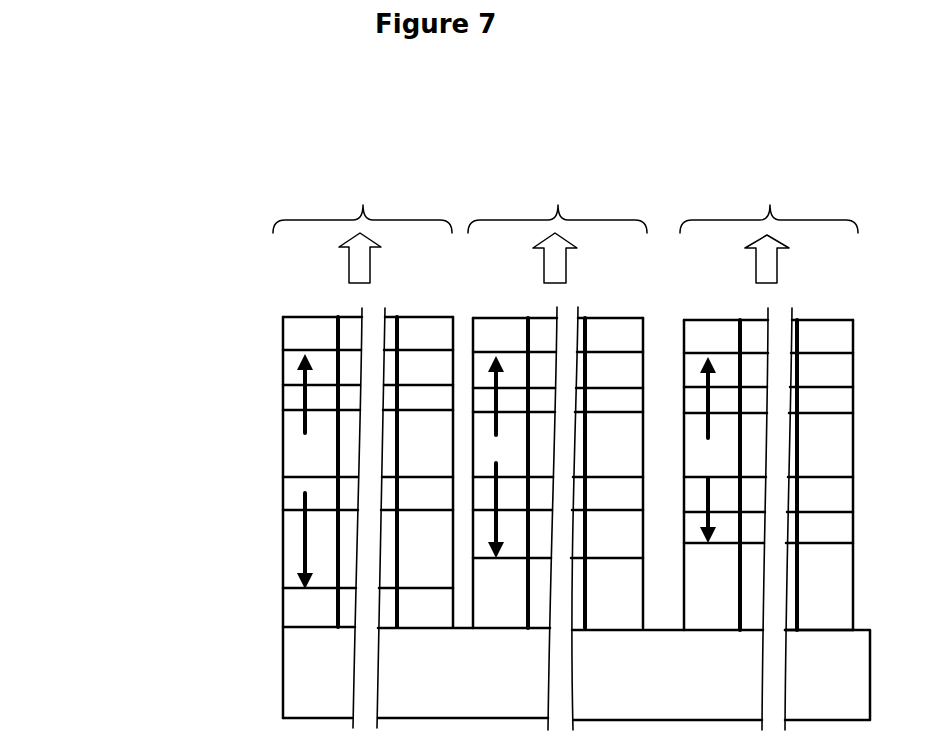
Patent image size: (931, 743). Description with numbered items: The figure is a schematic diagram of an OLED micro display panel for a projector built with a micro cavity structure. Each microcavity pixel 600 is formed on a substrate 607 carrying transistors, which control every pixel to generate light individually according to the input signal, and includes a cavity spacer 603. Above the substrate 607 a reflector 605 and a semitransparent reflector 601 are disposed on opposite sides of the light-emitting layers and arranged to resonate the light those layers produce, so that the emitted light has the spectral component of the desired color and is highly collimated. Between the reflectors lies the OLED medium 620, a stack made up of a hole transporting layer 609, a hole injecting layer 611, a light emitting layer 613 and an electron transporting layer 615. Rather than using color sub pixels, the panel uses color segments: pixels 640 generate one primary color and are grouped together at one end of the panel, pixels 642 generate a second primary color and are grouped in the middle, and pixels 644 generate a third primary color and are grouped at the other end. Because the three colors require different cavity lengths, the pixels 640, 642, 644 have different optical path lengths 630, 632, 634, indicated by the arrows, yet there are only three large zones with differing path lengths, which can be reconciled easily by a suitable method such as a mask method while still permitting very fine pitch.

The microcavity pixel 600 is at (100, 293).
The semitransparent reflector 601 is at (298, 335).
The cavity spacer 603 is at (292, 534).
The reflector 605 is at (290, 606).
The substrate 607 is at (292, 648).
The hole transporting layer 609 is at (292, 497).
The hole injecting layer 611 is at (292, 441).
The light emitting layer 613 is at (290, 398).
The electron transporting layer 615 is at (290, 362).
The OLED medium 620 is at (163, 348).
The optical path length 630 is at (299, 471).
The optical path length 632 is at (499, 457).
The optical path length 634 is at (711, 450).
The pixels 640 is at (362, 224).
The pixels 642 is at (557, 224).
The pixels 644 is at (769, 224).